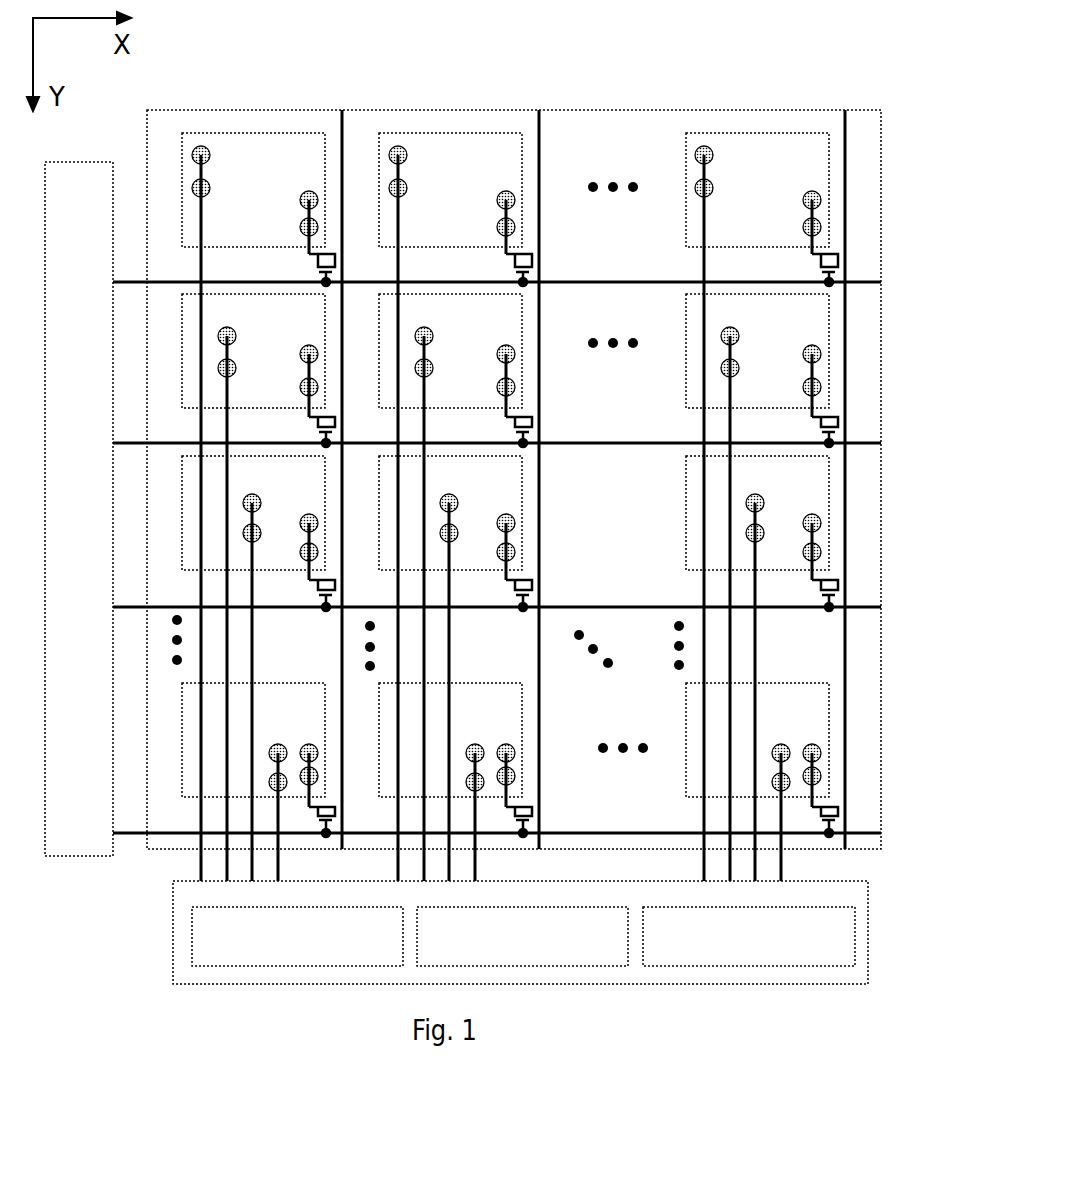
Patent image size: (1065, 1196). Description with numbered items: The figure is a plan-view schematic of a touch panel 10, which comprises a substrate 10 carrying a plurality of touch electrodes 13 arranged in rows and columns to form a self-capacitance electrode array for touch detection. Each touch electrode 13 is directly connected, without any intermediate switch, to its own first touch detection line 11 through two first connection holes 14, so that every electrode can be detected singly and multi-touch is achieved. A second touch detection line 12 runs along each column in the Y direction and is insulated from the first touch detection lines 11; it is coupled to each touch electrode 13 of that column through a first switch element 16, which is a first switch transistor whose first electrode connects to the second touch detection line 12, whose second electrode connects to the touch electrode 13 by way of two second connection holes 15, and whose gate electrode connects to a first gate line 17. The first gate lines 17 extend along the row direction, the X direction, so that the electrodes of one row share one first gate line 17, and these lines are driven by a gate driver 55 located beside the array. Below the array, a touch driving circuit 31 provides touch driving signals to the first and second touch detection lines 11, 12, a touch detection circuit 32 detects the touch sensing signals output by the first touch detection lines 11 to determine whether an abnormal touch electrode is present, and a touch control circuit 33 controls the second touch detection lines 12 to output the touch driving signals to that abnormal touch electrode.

The touch panel / substrate 10 is at (292, 122).
The first touch detection line 11 is at (757, 658).
The second touch detection line 12 is at (847, 708).
The touch electrode 13 is at (463, 157).
The first connection hole 14 is at (706, 148).
The second connection hole 15 is at (814, 222).
The first switch element 16 is at (848, 254).
The first gate line 17 is at (855, 445).
The touch driving circuit 31 is at (349, 964).
The touch detection circuit 32 is at (575, 962).
The touch control circuit 33 is at (797, 963).
The gate driver 55 is at (65, 615).